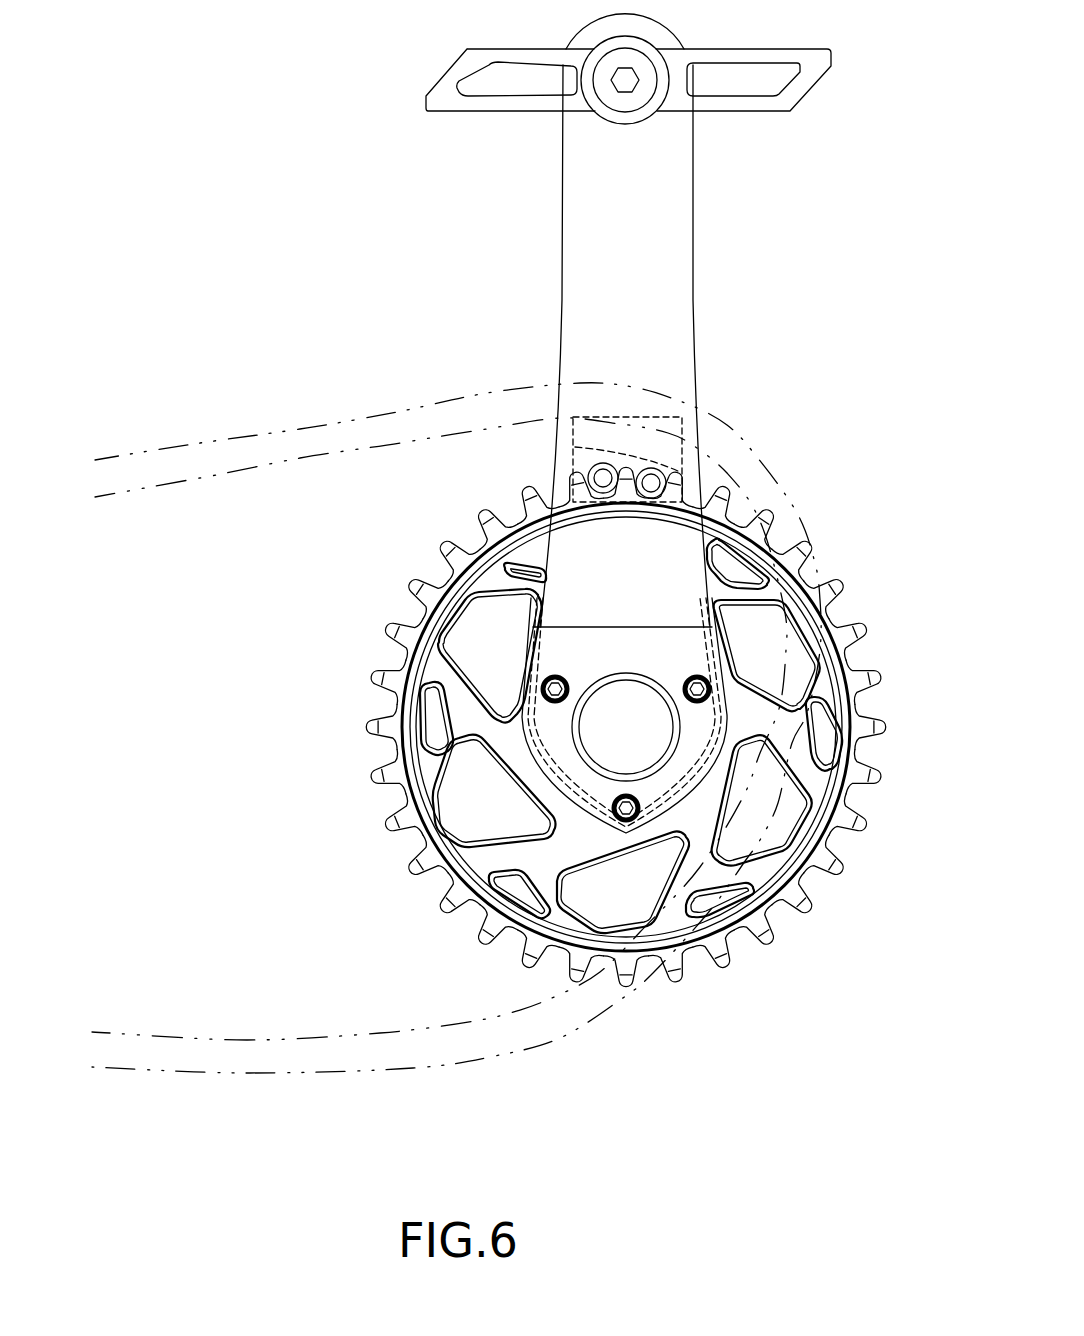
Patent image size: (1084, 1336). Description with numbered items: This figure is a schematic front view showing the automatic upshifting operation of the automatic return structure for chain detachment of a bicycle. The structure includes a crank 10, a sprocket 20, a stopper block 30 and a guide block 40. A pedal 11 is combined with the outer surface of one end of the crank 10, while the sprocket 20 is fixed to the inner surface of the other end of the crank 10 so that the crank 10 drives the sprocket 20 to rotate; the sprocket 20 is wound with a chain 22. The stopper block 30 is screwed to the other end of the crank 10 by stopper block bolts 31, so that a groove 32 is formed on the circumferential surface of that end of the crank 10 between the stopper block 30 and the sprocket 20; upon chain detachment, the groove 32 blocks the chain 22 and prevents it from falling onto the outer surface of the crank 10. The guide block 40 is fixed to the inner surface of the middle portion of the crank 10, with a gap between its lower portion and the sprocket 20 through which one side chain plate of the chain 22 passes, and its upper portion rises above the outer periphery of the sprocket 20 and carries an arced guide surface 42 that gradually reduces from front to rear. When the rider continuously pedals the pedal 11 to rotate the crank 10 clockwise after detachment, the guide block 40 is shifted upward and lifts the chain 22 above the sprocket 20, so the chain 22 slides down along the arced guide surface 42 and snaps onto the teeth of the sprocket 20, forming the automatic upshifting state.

The crank 10 is at (580, 195).
The pedal 11 is at (448, 68).
The sprocket 20 is at (768, 912).
The chain 22 is at (327, 433).
The stopper block 30 is at (593, 643).
The stopper block bolts 31 is at (546, 683).
The groove 32 is at (517, 790).
The guide block 40 is at (580, 463).
The arced guide surface 42 is at (647, 442).